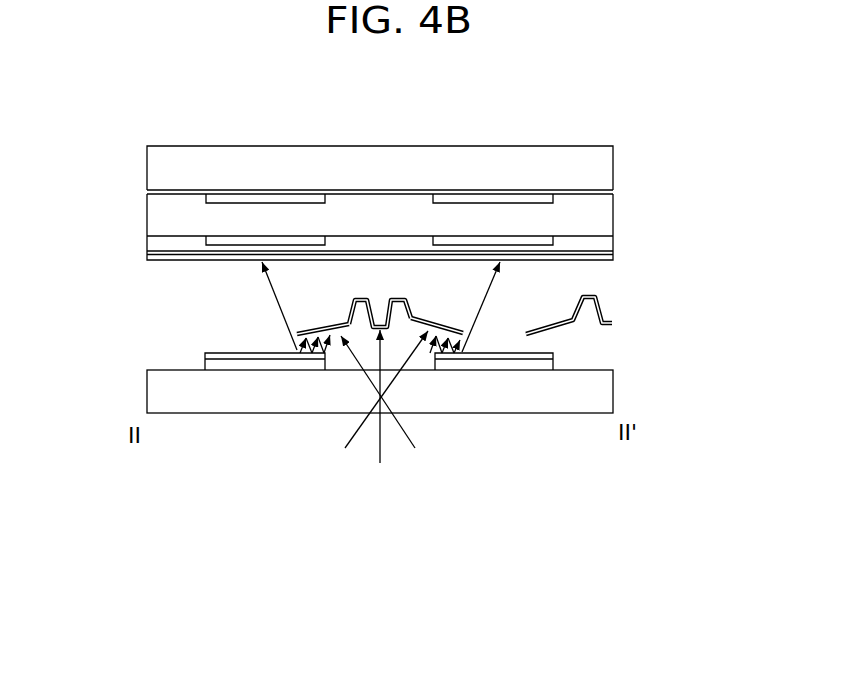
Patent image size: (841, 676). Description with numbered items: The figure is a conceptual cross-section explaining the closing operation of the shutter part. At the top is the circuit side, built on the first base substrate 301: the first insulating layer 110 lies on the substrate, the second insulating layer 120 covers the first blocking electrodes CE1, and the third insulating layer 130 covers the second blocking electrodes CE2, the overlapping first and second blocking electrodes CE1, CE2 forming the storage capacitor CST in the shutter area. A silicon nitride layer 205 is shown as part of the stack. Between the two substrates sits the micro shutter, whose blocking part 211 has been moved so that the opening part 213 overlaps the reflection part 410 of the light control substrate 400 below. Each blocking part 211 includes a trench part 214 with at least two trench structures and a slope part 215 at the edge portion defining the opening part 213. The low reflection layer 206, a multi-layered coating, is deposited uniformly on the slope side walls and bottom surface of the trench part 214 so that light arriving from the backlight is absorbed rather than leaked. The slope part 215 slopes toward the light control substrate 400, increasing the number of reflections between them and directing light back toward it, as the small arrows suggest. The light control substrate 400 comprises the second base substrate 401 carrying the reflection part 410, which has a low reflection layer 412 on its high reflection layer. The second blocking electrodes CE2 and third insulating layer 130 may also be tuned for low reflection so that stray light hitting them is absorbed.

The first base substrate 301 is at (150, 167).
The first insulating layer 110 is at (150, 190).
The second insulating layer 120 is at (150, 217).
The third insulating layer 130 is at (150, 242).
The silicon nitride layer 205 is at (150, 258).
The storage capacitor CST is at (557, 90).
The first blocking electrode CE1 is at (487, 195).
The second blocking electrode CE2 is at (537, 240).
The blocking part 211 is at (308, 321).
The opening part 213 is at (462, 317).
The trench part 214 is at (406, 295).
The slope part 215 is at (338, 337).
The low reflection layer 206 is at (608, 326).
The light control substrate 400 is at (374, 457).
The second base substrate 401 is at (152, 393).
The reflection part 410 is at (381, 457).
The low reflection layer 412 is at (558, 521).